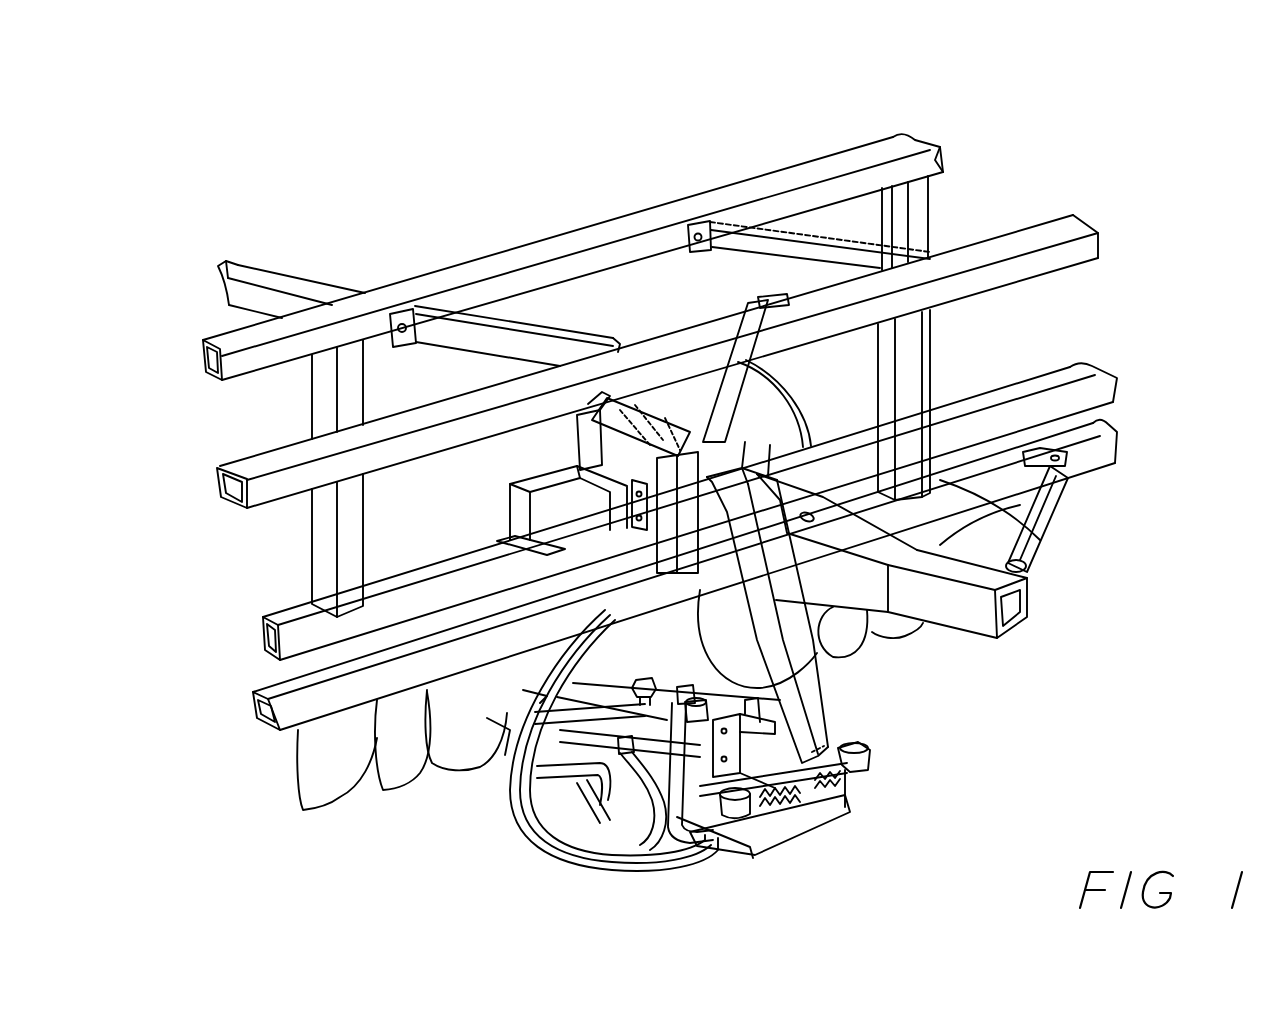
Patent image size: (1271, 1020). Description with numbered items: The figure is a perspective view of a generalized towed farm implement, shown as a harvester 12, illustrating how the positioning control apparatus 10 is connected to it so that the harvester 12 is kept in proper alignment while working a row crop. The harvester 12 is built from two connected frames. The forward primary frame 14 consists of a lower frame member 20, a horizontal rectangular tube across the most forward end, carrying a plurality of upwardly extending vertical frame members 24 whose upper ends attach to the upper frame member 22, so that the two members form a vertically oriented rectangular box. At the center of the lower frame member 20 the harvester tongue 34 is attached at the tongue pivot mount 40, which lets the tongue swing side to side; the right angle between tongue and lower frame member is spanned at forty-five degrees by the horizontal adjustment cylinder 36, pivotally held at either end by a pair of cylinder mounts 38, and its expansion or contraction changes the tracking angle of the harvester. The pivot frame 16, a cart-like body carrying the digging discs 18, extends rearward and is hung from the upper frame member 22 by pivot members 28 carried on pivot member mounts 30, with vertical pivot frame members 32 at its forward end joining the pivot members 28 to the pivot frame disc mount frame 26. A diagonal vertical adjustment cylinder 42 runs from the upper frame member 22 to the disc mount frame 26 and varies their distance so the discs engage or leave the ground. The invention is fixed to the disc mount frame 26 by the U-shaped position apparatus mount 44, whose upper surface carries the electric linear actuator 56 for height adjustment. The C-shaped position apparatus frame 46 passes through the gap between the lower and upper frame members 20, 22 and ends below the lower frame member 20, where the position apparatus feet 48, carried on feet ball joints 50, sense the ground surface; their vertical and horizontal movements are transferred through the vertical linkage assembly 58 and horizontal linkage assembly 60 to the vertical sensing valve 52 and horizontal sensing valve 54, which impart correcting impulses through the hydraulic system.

The positioning control apparatus 10 is at (860, 683).
The harvester 12 is at (580, 207).
The primary frame 14 is at (1100, 196).
The pivot frame 16 is at (655, 207).
The digging discs 18 is at (440, 767).
The lower frame member 20 is at (1097, 468).
The upper frame member 22 is at (1105, 235).
The vertical frame members 24 is at (913, 360).
The pivot frame disc mount frame 26 is at (255, 621).
The pivot members 28 is at (487, 317).
The pivot member mounts 30 is at (401, 316).
The vertical pivot frame members 32 is at (308, 541).
The harvester tongue 34 is at (1033, 613).
The horizontal adjustment cylinder 36 is at (1052, 533).
The cylinder mounts 38 is at (774, 295).
The tongue pivot mount 40 is at (817, 523).
The vertical adjustment cylinder 42 is at (725, 367).
The position apparatus mount 44 is at (505, 498).
The position apparatus frame 46 is at (860, 752).
The position apparatus feet 48 is at (820, 807).
The feet ball joint 50 is at (868, 770).
The vertical sensing valve 52 is at (542, 800).
The horizontal sensing valve 54 is at (610, 773).
The electric linear actuator 56 is at (605, 438).
The vertical linkage assembly 58 is at (850, 800).
The horizontal linkage assembly 60 is at (710, 790).